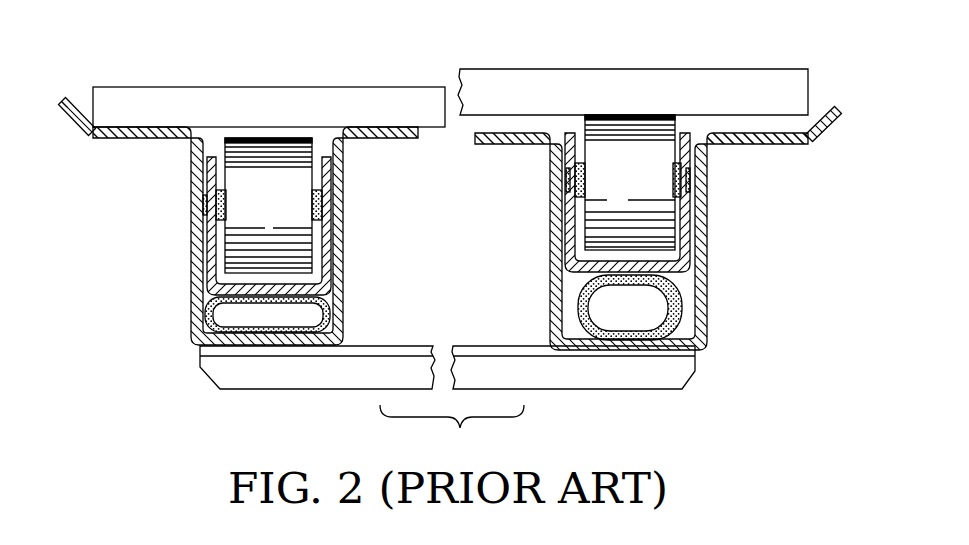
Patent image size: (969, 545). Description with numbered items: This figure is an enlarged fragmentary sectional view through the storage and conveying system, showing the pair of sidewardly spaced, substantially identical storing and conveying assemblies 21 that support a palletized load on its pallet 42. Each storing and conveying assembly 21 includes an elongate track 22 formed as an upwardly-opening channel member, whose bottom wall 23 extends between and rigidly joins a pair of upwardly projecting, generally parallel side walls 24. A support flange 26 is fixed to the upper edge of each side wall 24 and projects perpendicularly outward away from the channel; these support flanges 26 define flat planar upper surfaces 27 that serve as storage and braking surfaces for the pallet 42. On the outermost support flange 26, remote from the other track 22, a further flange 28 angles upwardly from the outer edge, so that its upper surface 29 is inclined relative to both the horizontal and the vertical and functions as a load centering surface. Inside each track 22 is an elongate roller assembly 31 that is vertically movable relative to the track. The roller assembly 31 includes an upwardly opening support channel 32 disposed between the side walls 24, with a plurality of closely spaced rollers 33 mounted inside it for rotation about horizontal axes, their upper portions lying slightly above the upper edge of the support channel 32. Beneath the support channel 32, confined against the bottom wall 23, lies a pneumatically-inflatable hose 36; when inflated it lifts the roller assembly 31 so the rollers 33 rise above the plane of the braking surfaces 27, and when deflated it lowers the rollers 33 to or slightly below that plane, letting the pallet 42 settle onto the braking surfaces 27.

The storing and conveying assembly 21 is at (466, 218).
The track 22 is at (466, 233).
The bottom wall 23 is at (255, 345).
The side wall 24 is at (200, 268).
The support flange 26 is at (137, 137).
The upper surface 27 is at (160, 131).
The further flange 28 is at (72, 120).
The upper surface 29 is at (70, 102).
The roller assembly 31 is at (268, 128).
The support channel 32 is at (212, 240).
The roller 33 is at (243, 153).
The pneumatically-inflatable hose 36 is at (207, 316).
The pallet 42 is at (695, 82).